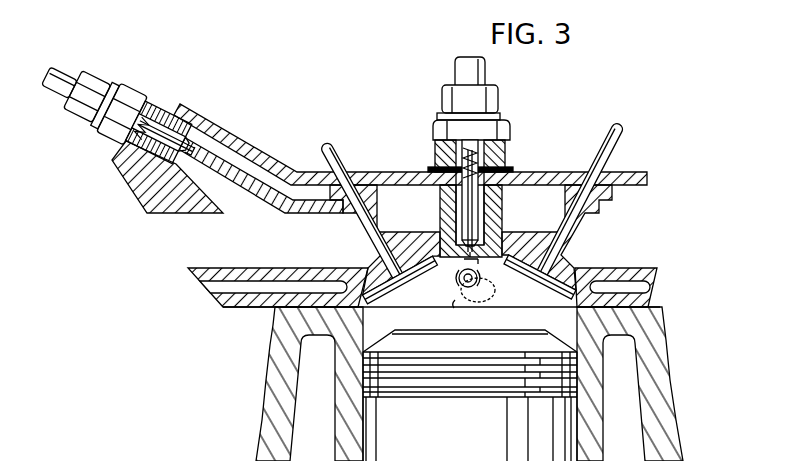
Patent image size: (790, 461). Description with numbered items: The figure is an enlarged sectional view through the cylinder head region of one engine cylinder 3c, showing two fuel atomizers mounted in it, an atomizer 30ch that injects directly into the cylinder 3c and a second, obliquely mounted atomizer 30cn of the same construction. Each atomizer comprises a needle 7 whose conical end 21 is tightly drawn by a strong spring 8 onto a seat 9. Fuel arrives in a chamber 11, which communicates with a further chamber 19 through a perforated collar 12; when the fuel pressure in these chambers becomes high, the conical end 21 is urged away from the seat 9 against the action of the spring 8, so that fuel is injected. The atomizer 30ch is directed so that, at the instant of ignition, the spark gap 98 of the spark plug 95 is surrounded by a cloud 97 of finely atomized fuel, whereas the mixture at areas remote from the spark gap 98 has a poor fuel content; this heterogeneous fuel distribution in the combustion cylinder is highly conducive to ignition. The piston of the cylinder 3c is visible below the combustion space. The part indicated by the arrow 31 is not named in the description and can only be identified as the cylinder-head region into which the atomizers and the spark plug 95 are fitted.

The cylinder 3c is at (439, 322).
The needle 7 is at (135, 168).
The strong spring 8 is at (114, 167).
The seat 9 is at (182, 152).
The chamber 11 is at (110, 123).
The perforated collar 12 is at (176, 150).
The chamber 19 is at (155, 178).
The conical end 21 is at (178, 168).
The atomizer 30ch is at (430, 110).
The atomizer 30cn is at (140, 70).
The cylinder head 31 is at (371, 148).
The spark plug 95 is at (447, 272).
The cloud of finely atomized fuel 97 is at (496, 287).
The spark gap 98 is at (454, 300).